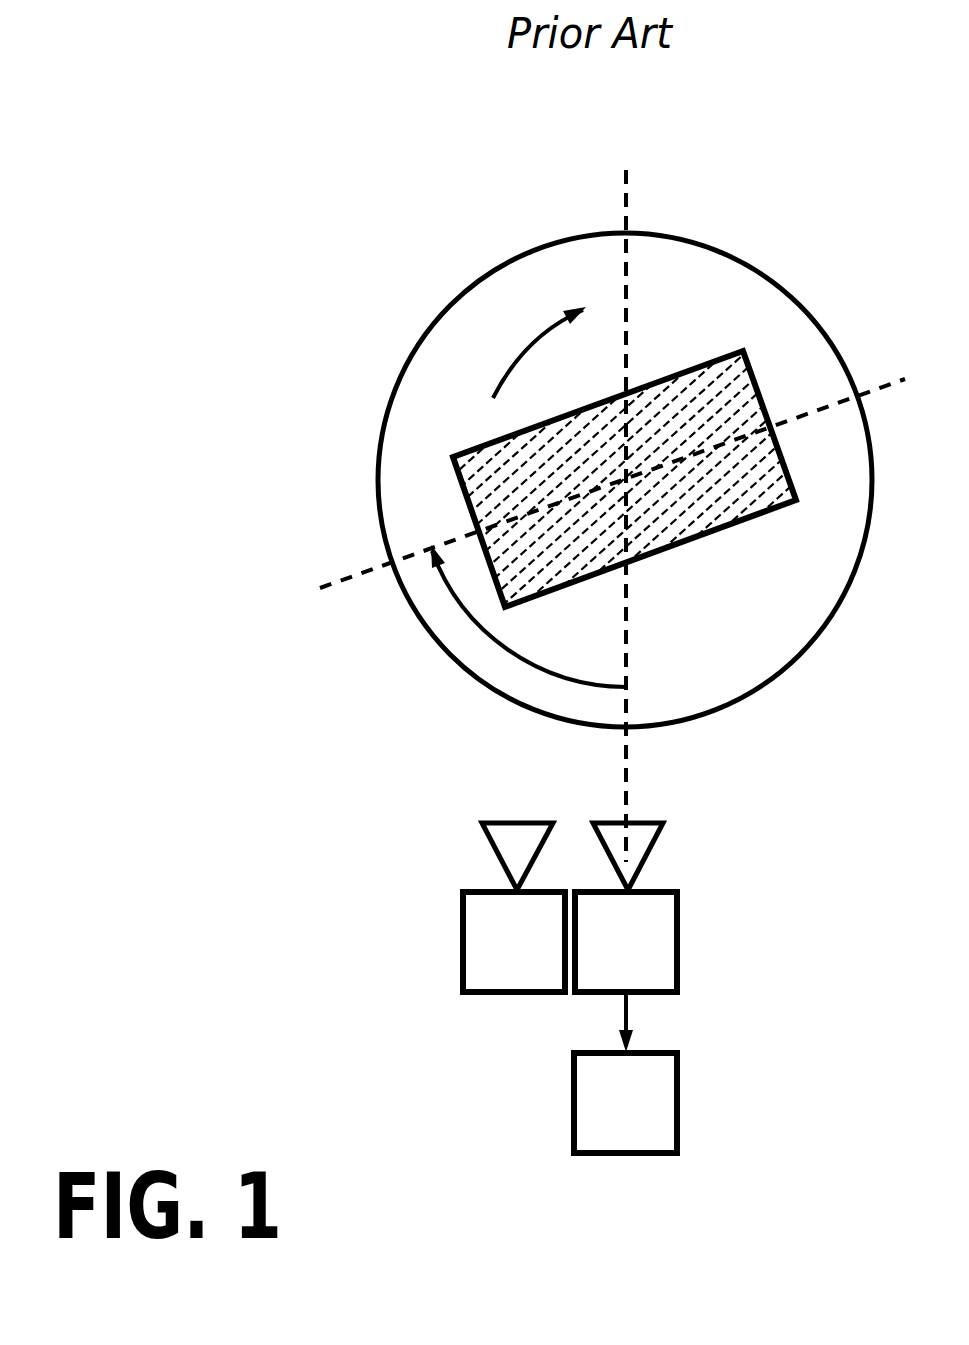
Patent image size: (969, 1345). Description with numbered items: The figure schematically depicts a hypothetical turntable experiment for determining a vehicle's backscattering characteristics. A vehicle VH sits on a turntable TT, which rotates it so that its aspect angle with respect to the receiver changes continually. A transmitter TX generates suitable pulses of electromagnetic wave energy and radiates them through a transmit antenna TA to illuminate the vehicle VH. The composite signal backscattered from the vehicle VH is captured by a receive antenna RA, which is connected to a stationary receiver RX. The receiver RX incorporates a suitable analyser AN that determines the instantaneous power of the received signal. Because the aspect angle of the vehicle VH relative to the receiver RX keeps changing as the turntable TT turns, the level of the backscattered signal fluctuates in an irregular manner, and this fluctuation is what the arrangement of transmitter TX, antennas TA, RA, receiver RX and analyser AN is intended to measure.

The vehicle VH is at (624, 479).
The turntable TT is at (505, 367).
The transmit antenna TA is at (491, 856).
The receive antenna RA is at (657, 856).
The transmitter TX is at (514, 942).
The receiver RX is at (626, 942).
The analyser AN is at (625, 1103).